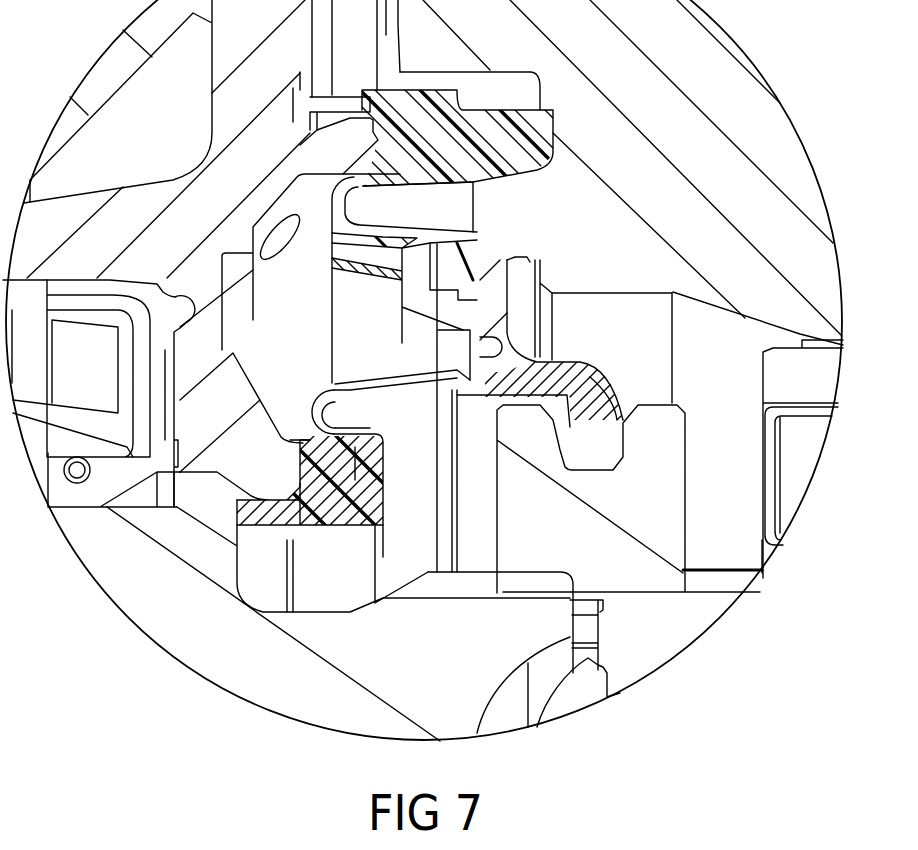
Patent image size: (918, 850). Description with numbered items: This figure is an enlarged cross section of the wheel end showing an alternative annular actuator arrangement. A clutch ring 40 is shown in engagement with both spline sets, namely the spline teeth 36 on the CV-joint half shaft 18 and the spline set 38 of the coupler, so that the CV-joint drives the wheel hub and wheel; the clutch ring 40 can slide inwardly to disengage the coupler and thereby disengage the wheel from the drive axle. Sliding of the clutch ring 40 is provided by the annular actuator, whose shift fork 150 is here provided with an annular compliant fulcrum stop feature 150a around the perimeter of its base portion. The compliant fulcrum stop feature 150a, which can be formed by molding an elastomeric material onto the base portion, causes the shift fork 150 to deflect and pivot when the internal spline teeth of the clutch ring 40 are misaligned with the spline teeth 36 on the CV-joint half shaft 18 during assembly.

The CV-joint half shaft 18 is at (225, 663).
The spline teeth 36 is at (478, 571).
The spline set 38 is at (735, 583).
The clutch ring 40 is at (677, 425).
The shift fork 150 is at (561, 358).
The compliant fulcrum stop feature 150a is at (527, 257).